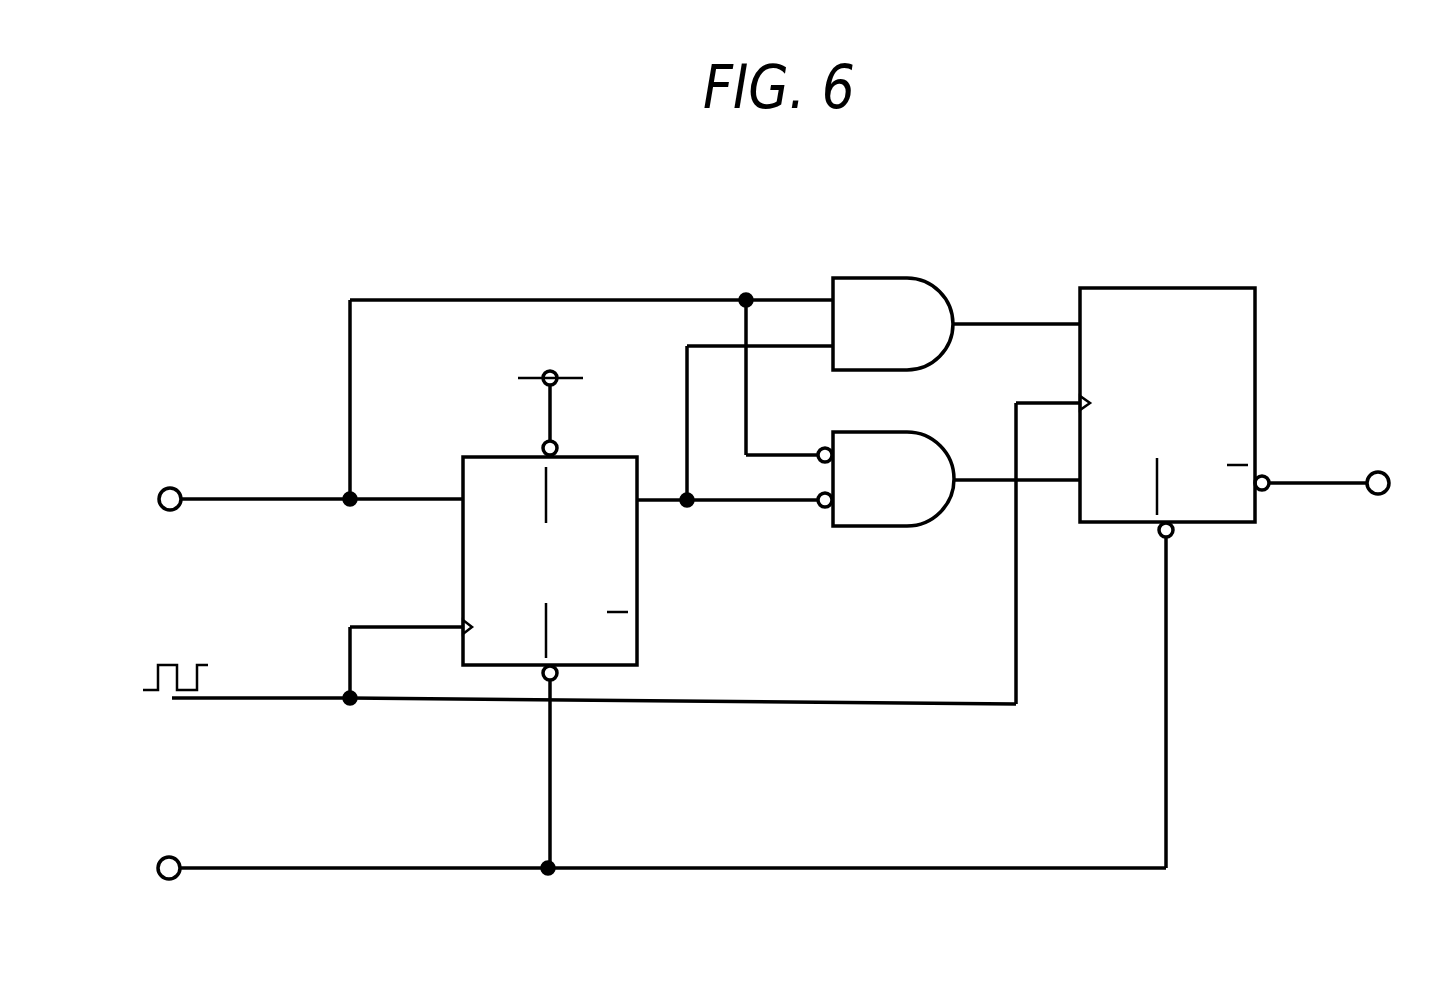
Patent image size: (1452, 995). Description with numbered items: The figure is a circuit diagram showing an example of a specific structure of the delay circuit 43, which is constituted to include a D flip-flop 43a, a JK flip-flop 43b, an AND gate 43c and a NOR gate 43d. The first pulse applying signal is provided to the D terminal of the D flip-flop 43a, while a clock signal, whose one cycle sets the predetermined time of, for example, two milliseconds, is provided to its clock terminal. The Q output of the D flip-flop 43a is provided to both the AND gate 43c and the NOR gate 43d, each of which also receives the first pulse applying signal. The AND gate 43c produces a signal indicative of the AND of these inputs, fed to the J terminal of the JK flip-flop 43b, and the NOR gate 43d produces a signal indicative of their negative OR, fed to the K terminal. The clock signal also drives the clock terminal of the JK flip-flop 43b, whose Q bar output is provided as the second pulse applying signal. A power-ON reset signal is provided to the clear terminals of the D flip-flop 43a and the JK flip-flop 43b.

The delay circuit 43 is at (1322, 242).
The D flip-flop 43a is at (637, 565).
The JK flip-flop 43b is at (1170, 288).
The AND gate 43c is at (882, 278).
The NOR gate 43d is at (882, 528).